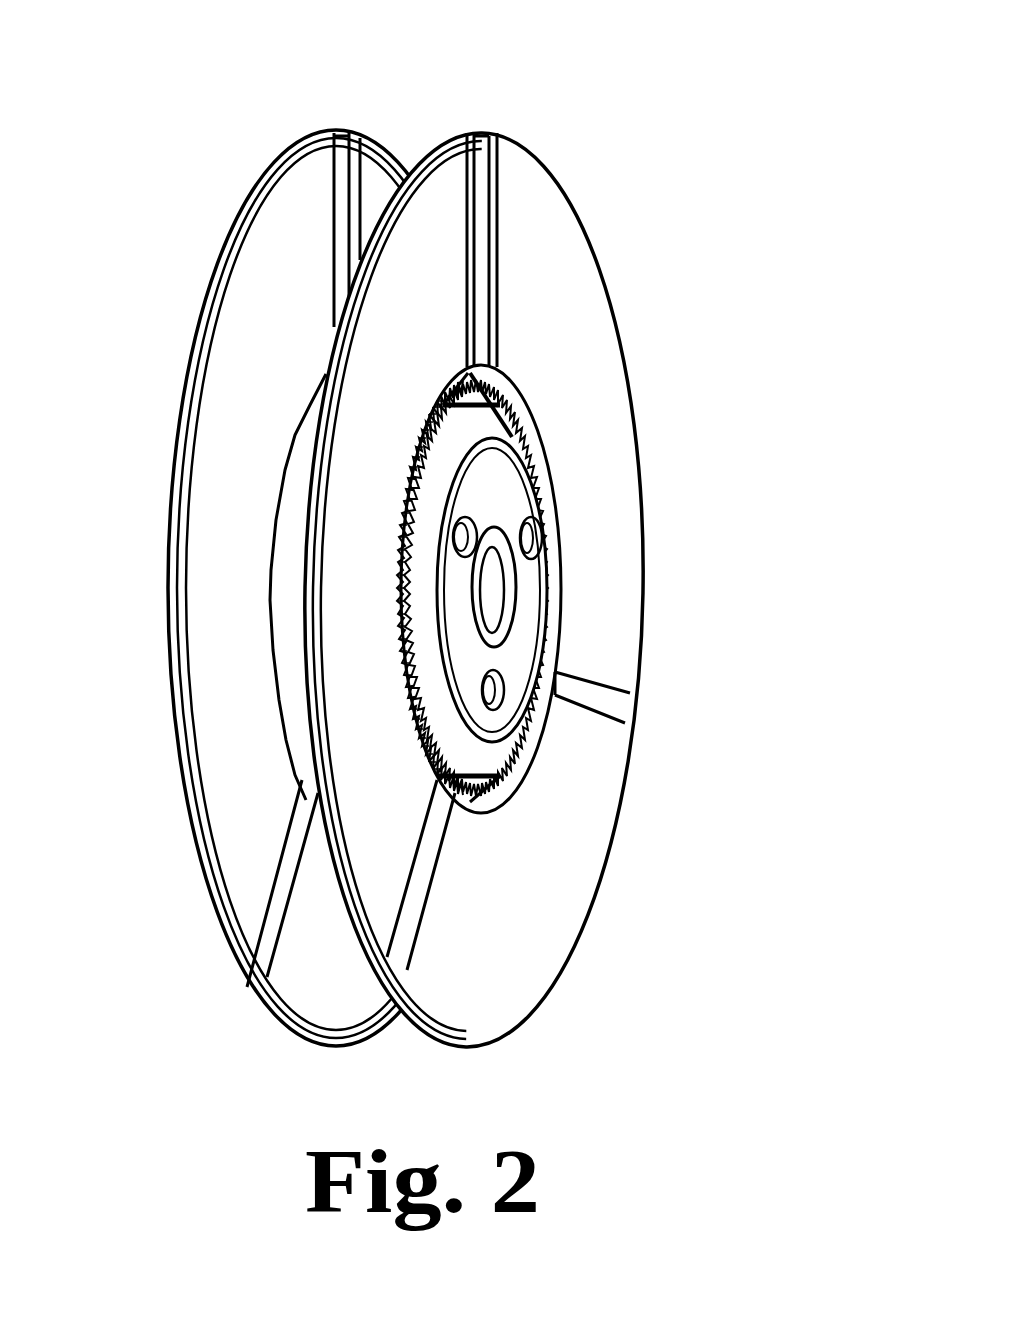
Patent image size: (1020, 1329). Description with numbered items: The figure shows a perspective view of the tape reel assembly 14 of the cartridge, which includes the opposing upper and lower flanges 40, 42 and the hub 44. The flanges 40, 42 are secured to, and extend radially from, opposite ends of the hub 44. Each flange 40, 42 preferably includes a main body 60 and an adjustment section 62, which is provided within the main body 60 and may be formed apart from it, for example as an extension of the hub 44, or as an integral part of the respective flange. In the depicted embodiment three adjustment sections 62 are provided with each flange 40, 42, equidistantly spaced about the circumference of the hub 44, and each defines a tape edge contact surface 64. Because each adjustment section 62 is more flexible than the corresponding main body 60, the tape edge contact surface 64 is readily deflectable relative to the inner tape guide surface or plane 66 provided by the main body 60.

The tape reel assembly 14 is at (403, 533).
The upper flange 40 is at (374, 162).
The lower flange 42 is at (602, 289).
The hub 44 is at (290, 589).
The main body 60 is at (213, 740).
The adjustment section 62 is at (614, 686).
The tape edge contact surface 64 is at (346, 197).
The inner tape guide surface 66 is at (240, 417).